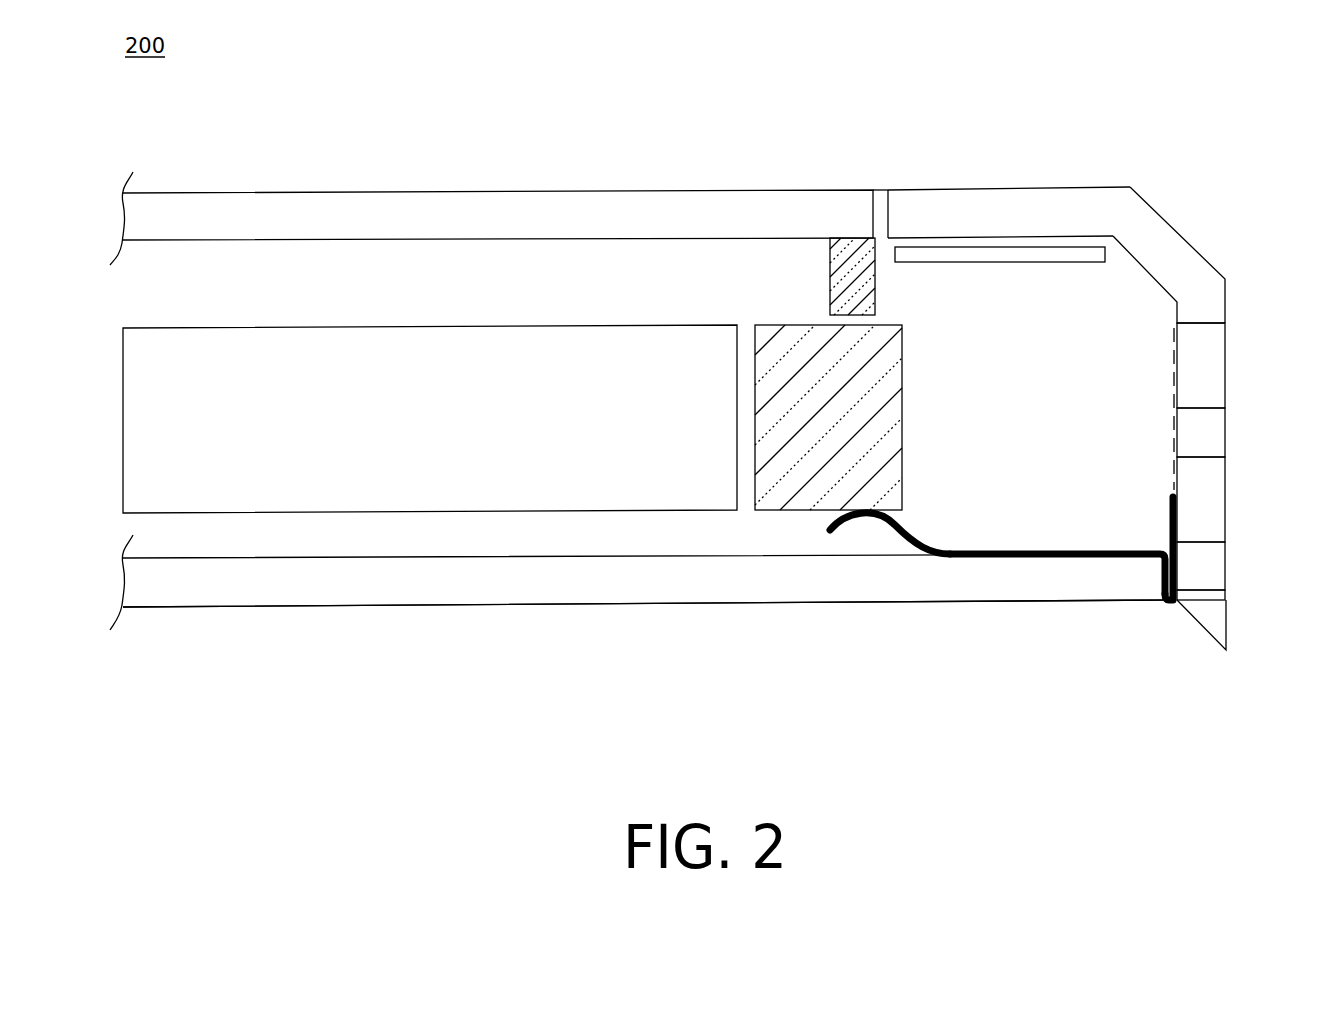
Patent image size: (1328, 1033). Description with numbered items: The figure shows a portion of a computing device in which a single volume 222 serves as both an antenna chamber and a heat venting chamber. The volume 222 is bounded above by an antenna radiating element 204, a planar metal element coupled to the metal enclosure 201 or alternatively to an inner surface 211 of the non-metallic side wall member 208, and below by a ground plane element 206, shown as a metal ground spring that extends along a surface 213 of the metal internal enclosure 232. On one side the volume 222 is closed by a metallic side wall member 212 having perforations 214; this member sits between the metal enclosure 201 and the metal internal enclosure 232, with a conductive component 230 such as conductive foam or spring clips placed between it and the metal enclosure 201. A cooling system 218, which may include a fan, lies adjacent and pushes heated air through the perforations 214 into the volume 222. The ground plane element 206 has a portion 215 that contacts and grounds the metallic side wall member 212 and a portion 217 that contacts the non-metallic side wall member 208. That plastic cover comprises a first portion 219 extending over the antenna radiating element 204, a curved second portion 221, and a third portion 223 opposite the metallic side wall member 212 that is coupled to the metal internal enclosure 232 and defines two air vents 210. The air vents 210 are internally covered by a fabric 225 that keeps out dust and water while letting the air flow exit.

The metal enclosure 201 is at (573, 218).
The antenna radiating element 204 is at (957, 252).
The ground plane element 206 is at (1097, 553).
The non-metallic side wall member 208 is at (937, 188).
The air vents 210 is at (1198, 375).
The inner surface 211 is at (1040, 236).
The metallic side wall member 212 is at (783, 505).
The surface 213 is at (279, 558).
The perforations 214 is at (819, 430).
The portion 215 is at (895, 527).
The portion 217 is at (1180, 603).
The cooling system 218 is at (492, 465).
The first portion 219 is at (1093, 203).
The second portion 221 is at (1158, 242).
The volume 222 is at (993, 392).
The third portion 223 is at (1210, 572).
The fabric 225 is at (1172, 377).
The conductive component 230 is at (847, 260).
The metal internal enclosure 232 is at (587, 590).